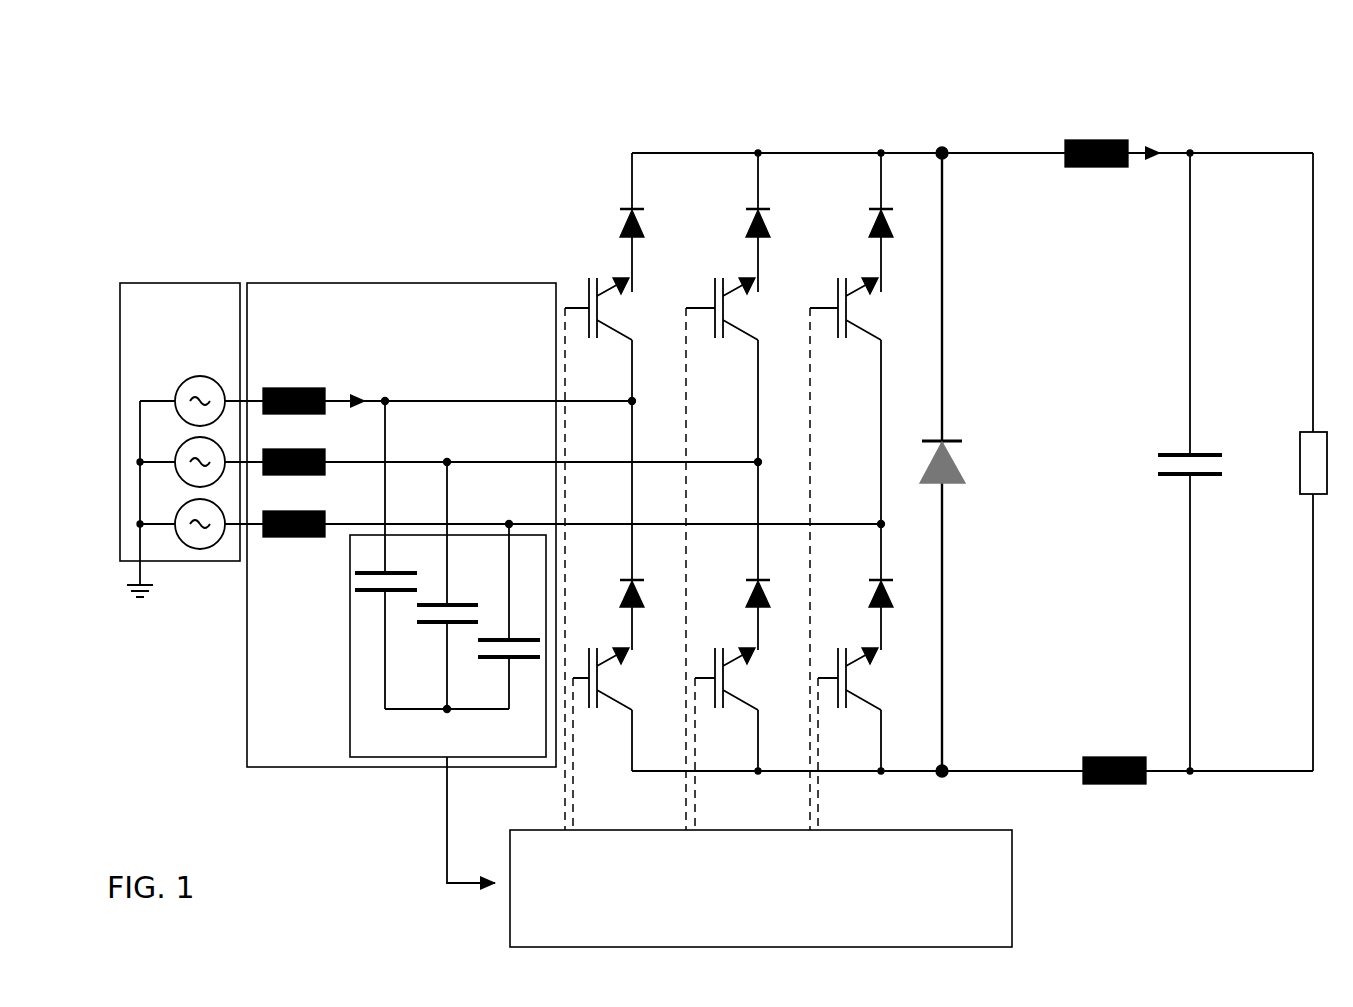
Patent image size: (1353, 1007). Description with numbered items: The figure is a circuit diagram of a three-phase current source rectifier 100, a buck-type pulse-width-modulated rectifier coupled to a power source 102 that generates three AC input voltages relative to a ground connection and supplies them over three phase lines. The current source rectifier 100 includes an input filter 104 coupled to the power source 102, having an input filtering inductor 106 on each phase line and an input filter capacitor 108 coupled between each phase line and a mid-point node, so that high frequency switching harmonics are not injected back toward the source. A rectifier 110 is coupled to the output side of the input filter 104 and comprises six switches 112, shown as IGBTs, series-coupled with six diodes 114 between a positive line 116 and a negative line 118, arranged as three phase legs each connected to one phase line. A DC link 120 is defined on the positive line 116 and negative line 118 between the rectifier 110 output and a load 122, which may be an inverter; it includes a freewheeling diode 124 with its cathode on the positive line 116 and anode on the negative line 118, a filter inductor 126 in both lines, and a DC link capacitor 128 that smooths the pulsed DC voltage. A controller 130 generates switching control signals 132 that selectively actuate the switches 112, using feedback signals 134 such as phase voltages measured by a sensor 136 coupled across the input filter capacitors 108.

The current source rectifier 100 is at (158, 58).
The power source 102 is at (186, 282).
The input filter 104 is at (314, 282).
The input filtering inductor 106 is at (272, 567).
The input filter capacitor 108 is at (375, 621).
The rectifier 110 is at (764, 108).
The switches 112 is at (543, 271).
The diodes 114 is at (598, 190).
The positive line 116 is at (968, 157).
The negative line 118 is at (968, 771).
The DC link 120 is at (1084, 108).
The load 122 is at (1300, 432).
The freewheeling diode 124 is at (955, 442).
The filter inductor 126 is at (1100, 167).
The DC link capacitor 128 is at (1204, 477).
The controller 130 is at (1012, 920).
The switching control signals 132 is at (770, 873).
The feedback signals 134 is at (446, 870).
The sensor 136 is at (345, 728).